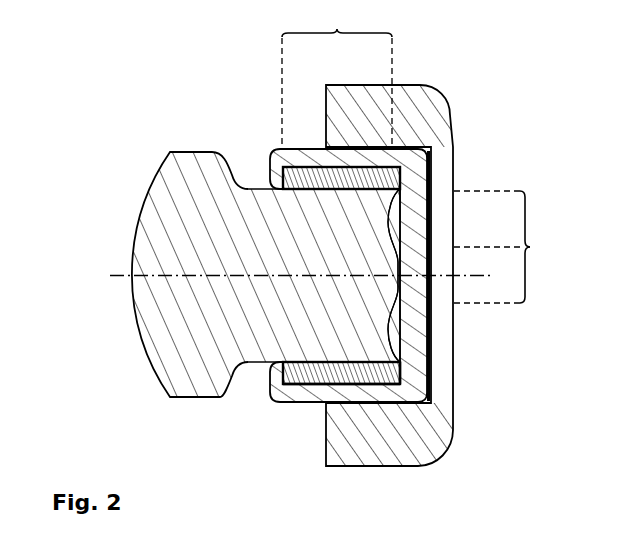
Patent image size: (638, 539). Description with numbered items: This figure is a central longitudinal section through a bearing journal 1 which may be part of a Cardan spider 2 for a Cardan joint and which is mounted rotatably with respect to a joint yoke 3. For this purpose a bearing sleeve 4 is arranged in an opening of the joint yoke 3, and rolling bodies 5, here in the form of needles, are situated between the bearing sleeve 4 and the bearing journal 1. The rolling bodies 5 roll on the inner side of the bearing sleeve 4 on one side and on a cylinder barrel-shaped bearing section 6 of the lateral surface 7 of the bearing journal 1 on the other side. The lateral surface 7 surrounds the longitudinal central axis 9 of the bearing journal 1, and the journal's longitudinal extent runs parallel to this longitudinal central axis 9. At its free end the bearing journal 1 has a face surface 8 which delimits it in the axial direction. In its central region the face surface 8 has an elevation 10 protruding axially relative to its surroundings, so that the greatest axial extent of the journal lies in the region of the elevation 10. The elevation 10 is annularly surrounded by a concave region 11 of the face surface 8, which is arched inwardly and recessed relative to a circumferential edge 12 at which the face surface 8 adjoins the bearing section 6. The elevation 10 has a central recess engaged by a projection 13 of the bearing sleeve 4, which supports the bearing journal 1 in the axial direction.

The bearing journal 1 is at (275, 323).
The Cardan spider 2 is at (177, 400).
The joint yoke 3 is at (420, 103).
The bearing sleeve 4 is at (337, 392).
The rolling bodies 5 is at (383, 390).
The bearing section 6 is at (337, 76).
The lateral surface 7 is at (313, 383).
The face surface 8 is at (393, 317).
The longitudinal central axis 9 is at (112, 274).
The elevation 10 is at (510, 275).
The concave region 11 is at (507, 219).
The circumferential edge 12 is at (400, 363).
The projection 13 is at (436, 195).